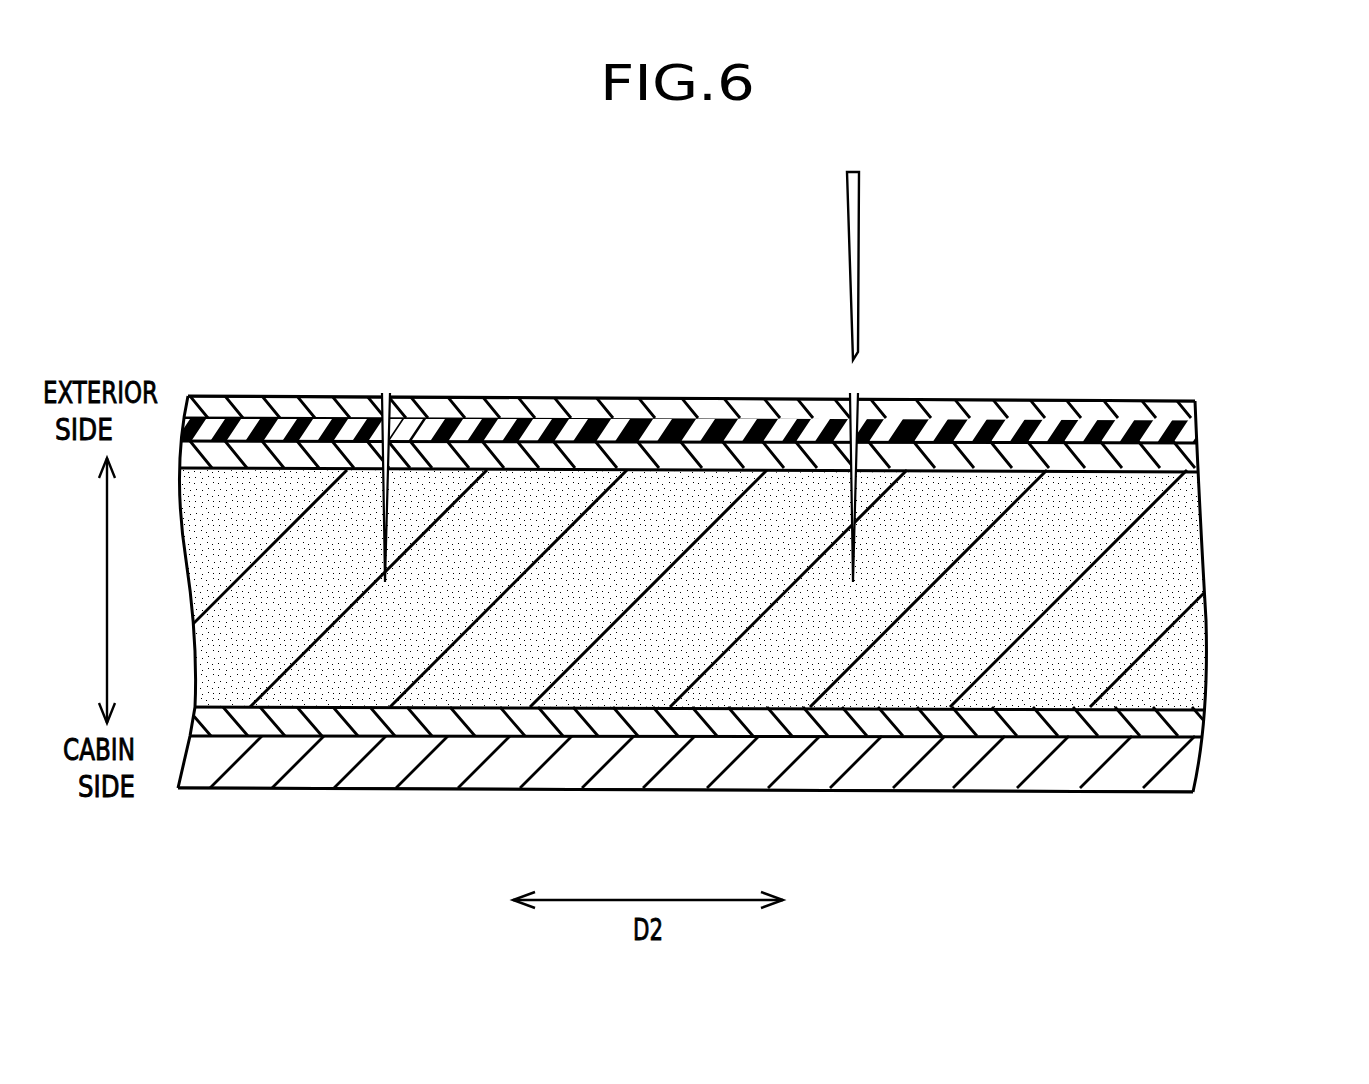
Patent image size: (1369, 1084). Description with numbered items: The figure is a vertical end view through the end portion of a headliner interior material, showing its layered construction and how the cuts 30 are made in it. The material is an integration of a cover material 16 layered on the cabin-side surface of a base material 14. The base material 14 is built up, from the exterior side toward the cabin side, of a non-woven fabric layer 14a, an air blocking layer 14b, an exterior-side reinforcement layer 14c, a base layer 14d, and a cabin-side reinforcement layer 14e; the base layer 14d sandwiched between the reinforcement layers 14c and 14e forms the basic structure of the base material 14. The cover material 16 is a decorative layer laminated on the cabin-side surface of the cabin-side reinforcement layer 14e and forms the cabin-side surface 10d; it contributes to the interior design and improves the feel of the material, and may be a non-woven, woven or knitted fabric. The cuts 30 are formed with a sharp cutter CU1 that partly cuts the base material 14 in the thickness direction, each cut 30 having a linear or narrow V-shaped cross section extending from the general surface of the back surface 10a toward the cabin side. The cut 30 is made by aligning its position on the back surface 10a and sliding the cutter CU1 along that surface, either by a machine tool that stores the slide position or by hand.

The cut 30 is at (383, 395).
The sharp cutter CU1 is at (860, 246).
The back surface 10a is at (1058, 398).
The cabin-side surface 10d is at (1043, 793).
The base material 14 is at (739, 562).
The non-woven fabric layer 14a is at (1195, 407).
The air blocking layer 14b is at (1195, 437).
The exterior-side reinforcement layer 14c is at (1195, 462).
The base layer 14d is at (1203, 602).
The cabin-side reinforcement layer 14e is at (739, 703).
The cover material 16 is at (1198, 765).